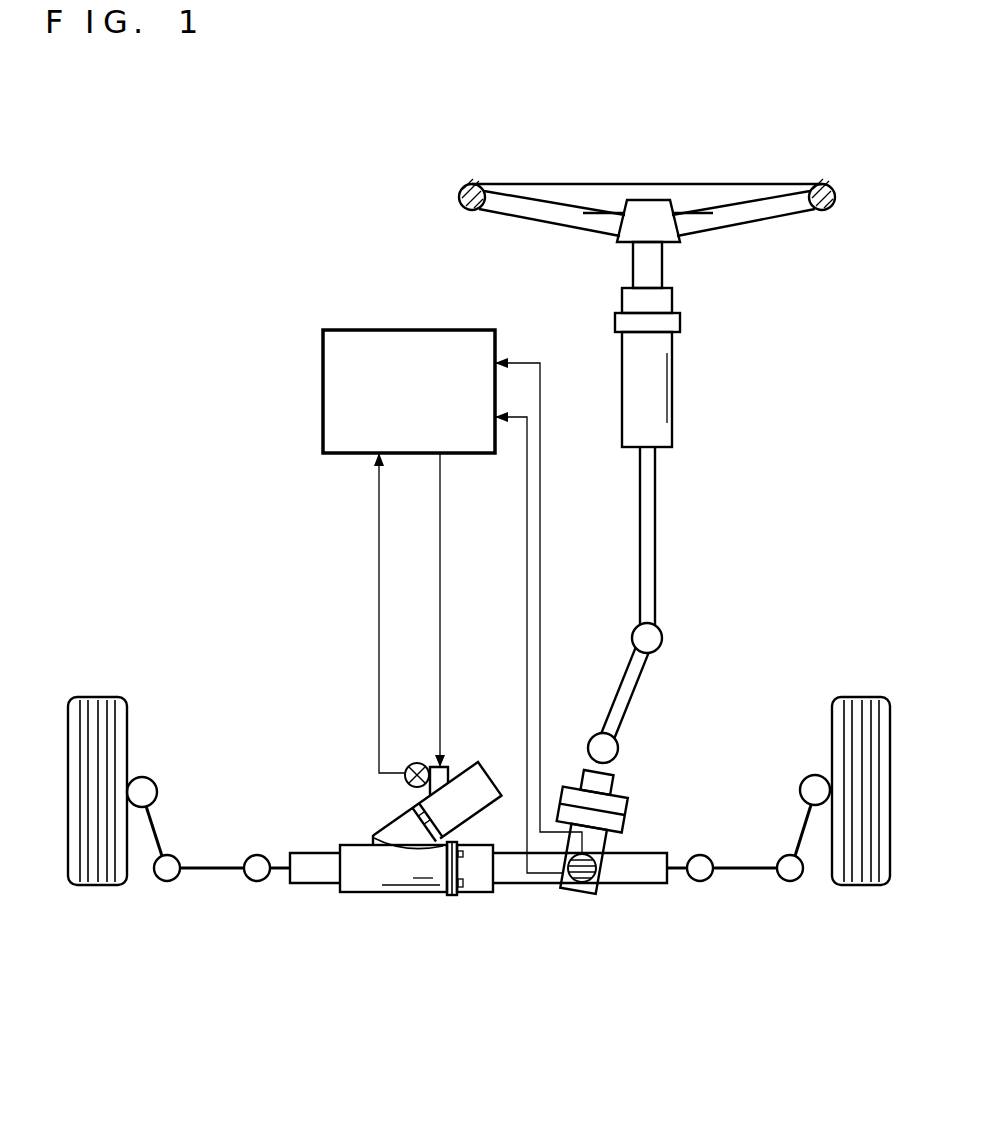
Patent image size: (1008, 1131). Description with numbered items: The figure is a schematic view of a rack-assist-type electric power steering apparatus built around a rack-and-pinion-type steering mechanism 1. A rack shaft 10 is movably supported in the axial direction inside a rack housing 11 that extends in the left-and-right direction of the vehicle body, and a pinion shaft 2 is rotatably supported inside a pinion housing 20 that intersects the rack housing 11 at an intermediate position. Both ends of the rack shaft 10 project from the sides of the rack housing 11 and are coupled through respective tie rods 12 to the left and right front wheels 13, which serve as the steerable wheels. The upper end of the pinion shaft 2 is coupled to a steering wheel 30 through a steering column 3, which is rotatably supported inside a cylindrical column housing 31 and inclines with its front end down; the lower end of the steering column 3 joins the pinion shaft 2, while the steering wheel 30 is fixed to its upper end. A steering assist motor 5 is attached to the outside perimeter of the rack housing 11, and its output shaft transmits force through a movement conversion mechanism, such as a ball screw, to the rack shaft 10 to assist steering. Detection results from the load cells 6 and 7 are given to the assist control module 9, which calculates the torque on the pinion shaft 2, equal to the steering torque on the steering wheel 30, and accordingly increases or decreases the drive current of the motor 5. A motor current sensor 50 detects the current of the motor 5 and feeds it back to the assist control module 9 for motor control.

The rack-and-pinion-type steering mechanism 1 is at (479, 928).
The pinion shaft 2 is at (613, 767).
The steering column 3 is at (655, 270).
The steering assist motor 5 is at (463, 757).
The load cell 6 is at (606, 862).
The load cell 7 is at (572, 893).
The assist control module 9 is at (323, 387).
The rack shaft 10 is at (280, 872).
The rack housing 11 is at (407, 893).
The tie rod 12 is at (203, 872).
The front wheel 13 is at (92, 887).
The pinion housing 20 is at (610, 837).
The steering wheel 30 is at (460, 192).
The column housing 31 is at (620, 298).
The motor current sensor 50 is at (405, 780).